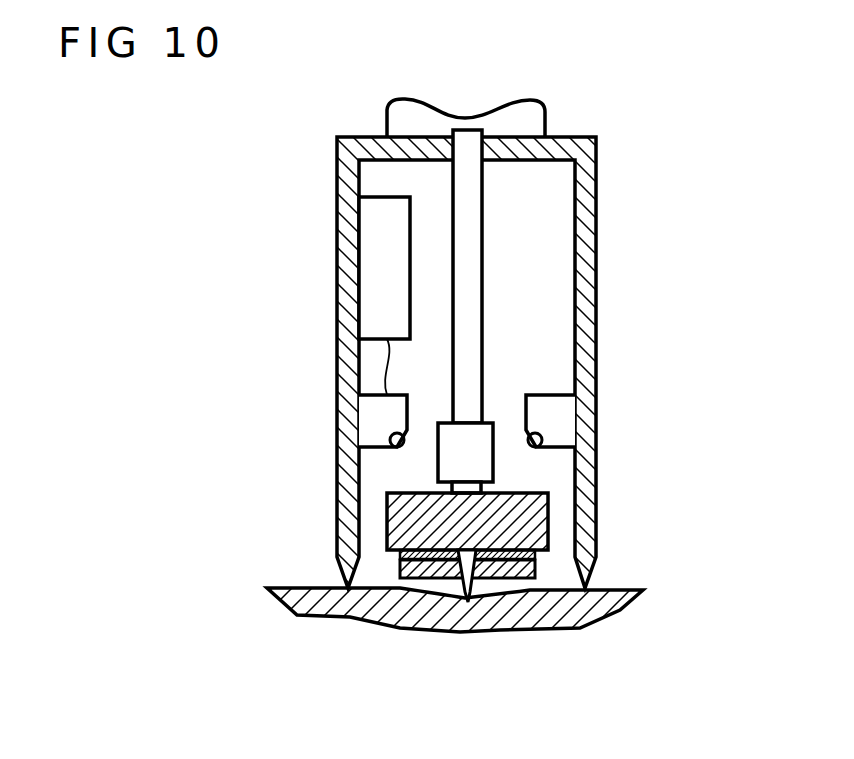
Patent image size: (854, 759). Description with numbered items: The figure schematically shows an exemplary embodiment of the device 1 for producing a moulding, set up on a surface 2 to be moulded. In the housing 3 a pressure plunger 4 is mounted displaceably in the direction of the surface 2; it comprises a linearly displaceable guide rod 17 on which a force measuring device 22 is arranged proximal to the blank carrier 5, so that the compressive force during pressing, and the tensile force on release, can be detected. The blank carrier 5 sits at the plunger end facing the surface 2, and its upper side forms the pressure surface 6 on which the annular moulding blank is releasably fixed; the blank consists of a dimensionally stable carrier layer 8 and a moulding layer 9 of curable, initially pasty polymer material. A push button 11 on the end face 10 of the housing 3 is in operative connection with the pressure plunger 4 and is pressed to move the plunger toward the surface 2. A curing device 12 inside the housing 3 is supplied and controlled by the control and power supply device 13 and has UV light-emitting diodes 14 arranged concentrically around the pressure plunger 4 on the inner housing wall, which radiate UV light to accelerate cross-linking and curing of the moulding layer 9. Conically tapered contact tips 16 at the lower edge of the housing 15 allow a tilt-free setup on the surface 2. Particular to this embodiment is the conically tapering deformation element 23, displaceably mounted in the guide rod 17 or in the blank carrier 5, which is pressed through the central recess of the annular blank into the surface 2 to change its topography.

The device 1 is at (658, 148).
The surface 2 is at (282, 590).
The housing 3 is at (348, 284).
The pressure plunger 4 is at (515, 472).
The blank carrier 5 is at (537, 518).
The pressure surface 6 is at (391, 553).
The carrier layer 8 is at (533, 558).
The moulding layer 9 is at (512, 572).
The end face 10 is at (567, 112).
The push button 11 is at (485, 112).
The curing device 12 is at (312, 355).
The control and power supply device 13 is at (372, 228).
The UV light-emitting diodes 14 is at (392, 440).
The lower edge of the housing 15 is at (330, 568).
The contact tips 16 is at (348, 572).
The guide rod 17 is at (463, 203).
The force measuring device 22 is at (483, 432).
The deformation element 23 is at (473, 582).